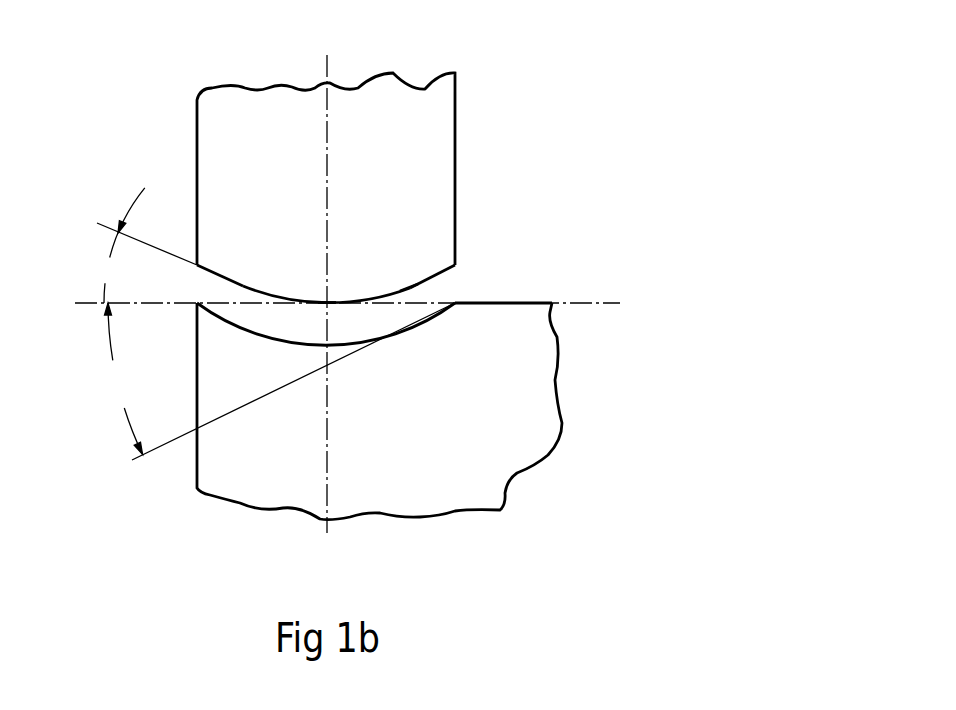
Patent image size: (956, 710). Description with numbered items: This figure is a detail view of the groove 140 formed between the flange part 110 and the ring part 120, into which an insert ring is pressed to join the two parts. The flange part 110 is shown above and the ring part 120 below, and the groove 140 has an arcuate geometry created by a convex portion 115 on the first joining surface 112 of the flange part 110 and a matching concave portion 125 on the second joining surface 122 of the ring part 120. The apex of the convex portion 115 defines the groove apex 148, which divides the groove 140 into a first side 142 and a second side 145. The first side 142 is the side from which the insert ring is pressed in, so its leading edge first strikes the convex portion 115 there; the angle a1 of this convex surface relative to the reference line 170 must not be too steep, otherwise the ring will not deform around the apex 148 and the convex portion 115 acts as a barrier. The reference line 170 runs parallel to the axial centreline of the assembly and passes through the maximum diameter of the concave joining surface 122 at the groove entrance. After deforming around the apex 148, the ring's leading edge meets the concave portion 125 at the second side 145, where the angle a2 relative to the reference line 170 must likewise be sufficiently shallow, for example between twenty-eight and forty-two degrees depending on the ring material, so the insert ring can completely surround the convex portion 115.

The flange part 110 is at (213, 163).
The first side of the groove 142 is at (282, 133).
The second side of the groove 145 is at (430, 133).
The groove apex 148 is at (328, 302).
The first joining surface 112 is at (415, 288).
The convex portion 115 is at (316, 288).
The groove 140 is at (440, 295).
The reference line 170 is at (600, 305).
The ring part 120 is at (478, 450).
The concave portion 125 is at (304, 375).
The second joining surface 122 is at (380, 340).
The angle of the convex surface a1 is at (144, 245).
The angle of the concave surface a2 is at (120, 379).